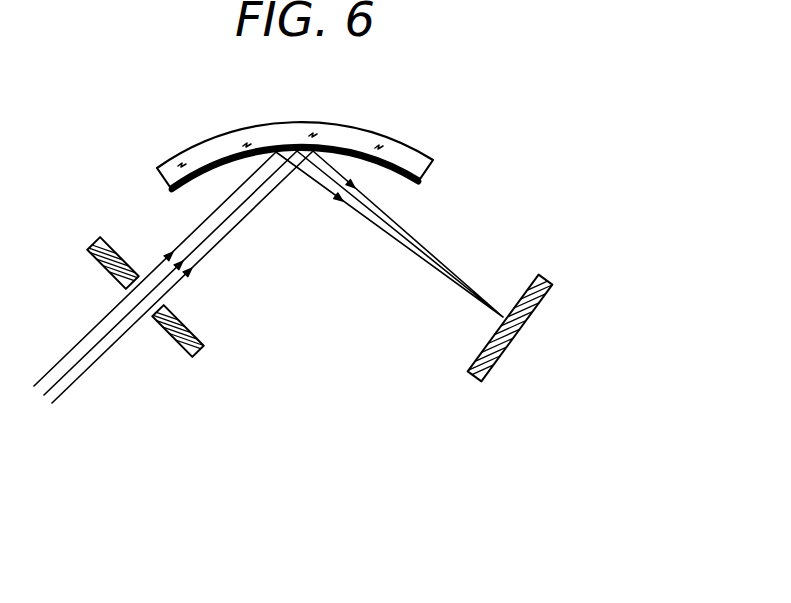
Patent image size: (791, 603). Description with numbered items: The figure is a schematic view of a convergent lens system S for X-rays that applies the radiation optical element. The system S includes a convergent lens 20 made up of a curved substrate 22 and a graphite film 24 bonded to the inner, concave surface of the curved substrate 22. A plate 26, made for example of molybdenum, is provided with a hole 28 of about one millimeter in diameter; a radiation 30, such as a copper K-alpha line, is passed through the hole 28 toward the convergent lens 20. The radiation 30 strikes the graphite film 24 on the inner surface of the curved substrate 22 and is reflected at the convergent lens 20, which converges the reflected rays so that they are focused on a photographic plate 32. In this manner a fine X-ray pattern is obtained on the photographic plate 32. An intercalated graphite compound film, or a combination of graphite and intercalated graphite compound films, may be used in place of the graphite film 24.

The convergent lens 20 is at (563, 133).
The curved substrate 22 is at (336, 127).
The graphite film 24 is at (423, 182).
The plate 26 is at (198, 336).
The hole 28 is at (167, 297).
The radiation 30 is at (107, 352).
The photographic plate 32 is at (548, 295).
The system S is at (663, 272).